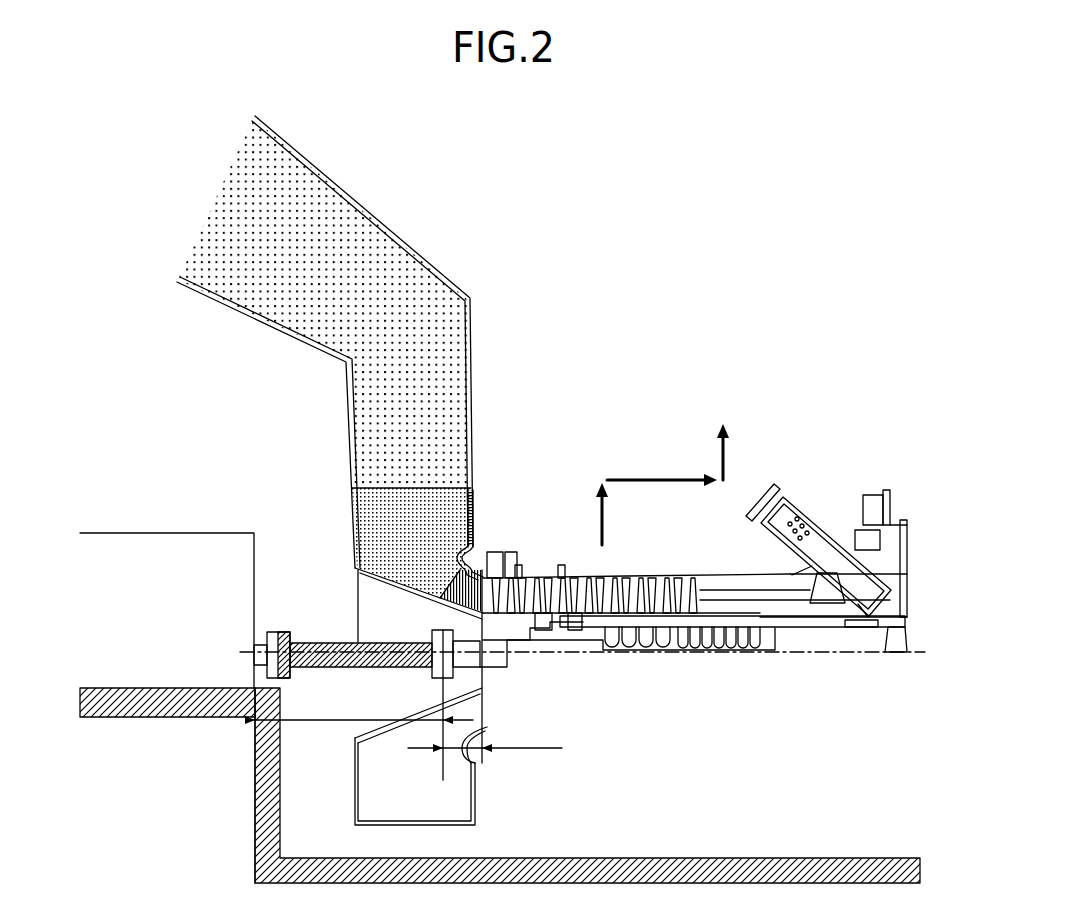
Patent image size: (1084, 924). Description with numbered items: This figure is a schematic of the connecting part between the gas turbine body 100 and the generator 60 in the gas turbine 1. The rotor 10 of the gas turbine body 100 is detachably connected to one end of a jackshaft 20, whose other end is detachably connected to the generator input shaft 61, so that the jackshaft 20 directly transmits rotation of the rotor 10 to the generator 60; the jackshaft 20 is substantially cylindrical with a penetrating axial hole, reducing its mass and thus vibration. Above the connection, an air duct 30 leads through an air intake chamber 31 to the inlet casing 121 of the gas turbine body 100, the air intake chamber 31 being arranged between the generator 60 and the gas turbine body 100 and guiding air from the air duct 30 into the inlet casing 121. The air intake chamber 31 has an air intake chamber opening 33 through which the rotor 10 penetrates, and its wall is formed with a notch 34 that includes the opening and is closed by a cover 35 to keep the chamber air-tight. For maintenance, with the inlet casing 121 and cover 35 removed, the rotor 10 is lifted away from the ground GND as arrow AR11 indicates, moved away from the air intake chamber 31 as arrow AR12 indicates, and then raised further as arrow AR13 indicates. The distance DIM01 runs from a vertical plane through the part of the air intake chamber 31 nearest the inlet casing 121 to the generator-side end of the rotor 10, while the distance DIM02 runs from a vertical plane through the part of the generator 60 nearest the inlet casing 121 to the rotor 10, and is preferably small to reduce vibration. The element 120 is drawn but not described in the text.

The gas turbine 1 is at (686, 312).
The rotor 10 is at (528, 643).
The jackshaft 20 is at (316, 642).
The air duct 30 is at (366, 196).
The air intake chamber 31 is at (357, 515).
The air intake chamber opening 33 is at (465, 560).
The notch 34 is at (532, 473).
The cover 35 is at (475, 513).
The generator 60 is at (140, 545).
The generator input shaft 61 is at (258, 632).
The gas turbine body 100 is at (842, 525).
The compressor 120 is at (525, 600).
The inlet casing 121 is at (472, 588).
The arrow AR11 is at (605, 512).
The arrow AR12 is at (647, 480).
The arrow AR13 is at (725, 455).
The distance DIM01 is at (485, 737).
The distance DIM02 is at (359, 711).
The ground GND is at (695, 855).